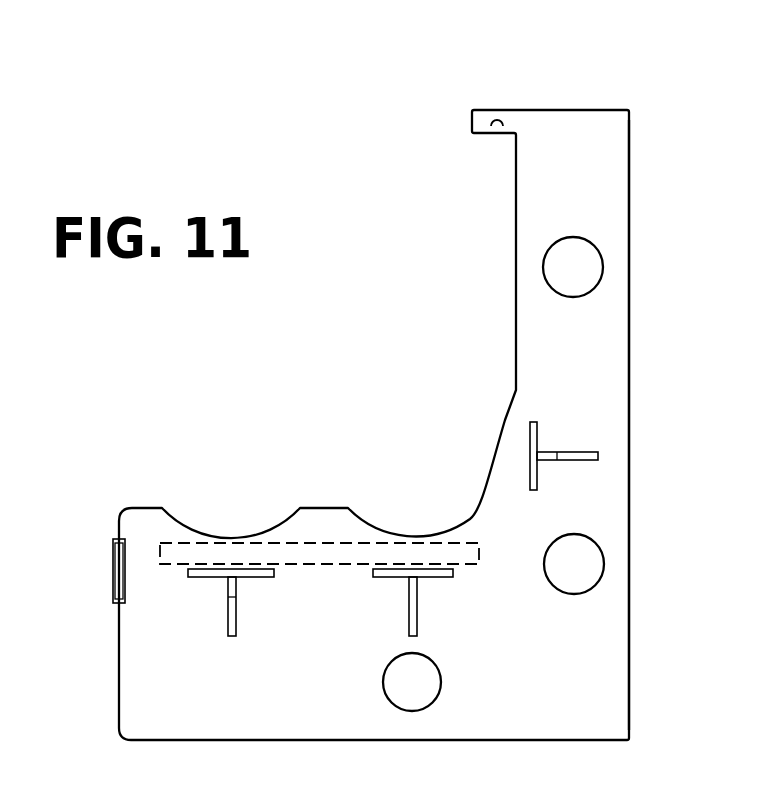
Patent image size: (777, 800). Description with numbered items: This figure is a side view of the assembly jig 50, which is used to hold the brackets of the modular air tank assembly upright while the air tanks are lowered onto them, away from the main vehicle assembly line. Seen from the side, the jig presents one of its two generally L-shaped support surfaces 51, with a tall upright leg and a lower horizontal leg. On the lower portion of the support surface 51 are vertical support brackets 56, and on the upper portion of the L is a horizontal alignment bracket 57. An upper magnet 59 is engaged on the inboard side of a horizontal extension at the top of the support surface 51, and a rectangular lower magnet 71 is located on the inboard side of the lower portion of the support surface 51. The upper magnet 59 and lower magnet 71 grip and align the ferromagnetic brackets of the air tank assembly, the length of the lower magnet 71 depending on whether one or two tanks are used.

The assembly jig 50 is at (598, 56).
The support surface 51 is at (588, 358).
The vertical support bracket 56 is at (240, 618).
The horizontal alignment bracket 57 is at (598, 452).
The upper magnet 59 is at (497, 135).
The lower magnet 71 is at (330, 540).